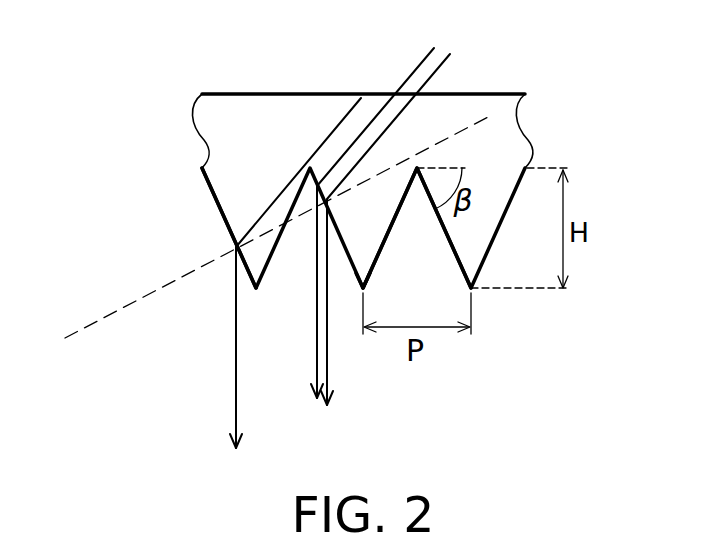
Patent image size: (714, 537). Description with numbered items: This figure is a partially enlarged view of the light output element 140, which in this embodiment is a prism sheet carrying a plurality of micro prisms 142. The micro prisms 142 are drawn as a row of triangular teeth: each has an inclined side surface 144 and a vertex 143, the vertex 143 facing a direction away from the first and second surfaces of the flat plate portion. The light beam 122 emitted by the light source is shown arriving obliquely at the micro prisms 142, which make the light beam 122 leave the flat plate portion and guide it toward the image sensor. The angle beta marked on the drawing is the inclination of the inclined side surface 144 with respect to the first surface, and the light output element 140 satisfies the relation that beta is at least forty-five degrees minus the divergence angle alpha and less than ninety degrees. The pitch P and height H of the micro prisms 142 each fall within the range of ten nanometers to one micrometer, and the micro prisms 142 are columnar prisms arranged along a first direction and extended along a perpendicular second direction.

The light beam 122 is at (421, 63).
The light output element 140 is at (272, 104).
The micro prisms 142 is at (372, 207).
The vertex 143 is at (363, 289).
The inclined side surface 144 is at (220, 212).